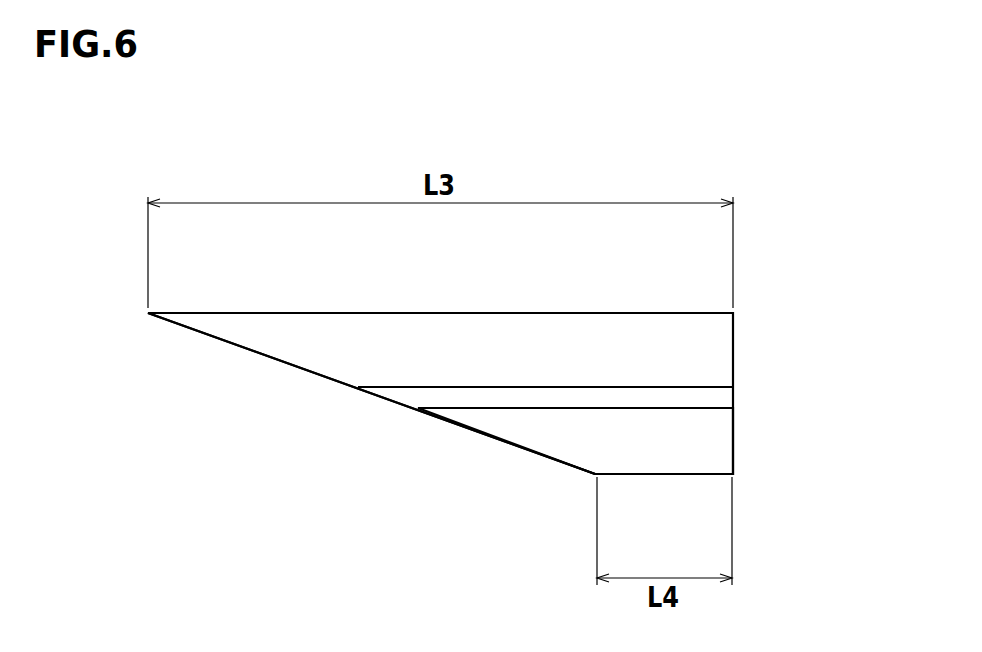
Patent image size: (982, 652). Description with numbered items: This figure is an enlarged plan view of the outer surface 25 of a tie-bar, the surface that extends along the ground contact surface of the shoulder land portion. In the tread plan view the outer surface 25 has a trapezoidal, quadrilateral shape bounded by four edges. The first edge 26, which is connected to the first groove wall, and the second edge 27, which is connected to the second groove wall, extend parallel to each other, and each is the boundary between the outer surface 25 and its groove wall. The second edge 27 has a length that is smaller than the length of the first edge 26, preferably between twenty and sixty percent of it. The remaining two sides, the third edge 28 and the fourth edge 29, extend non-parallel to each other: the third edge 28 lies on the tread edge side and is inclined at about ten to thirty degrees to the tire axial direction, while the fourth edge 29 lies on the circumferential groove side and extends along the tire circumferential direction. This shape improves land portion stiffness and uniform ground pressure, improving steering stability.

The outer surface 25 is at (666, 357).
The first edge 26 is at (440, 313).
The second edge 27 is at (657, 475).
The third edge 28 is at (258, 353).
The fourth edge 29 is at (723, 443).